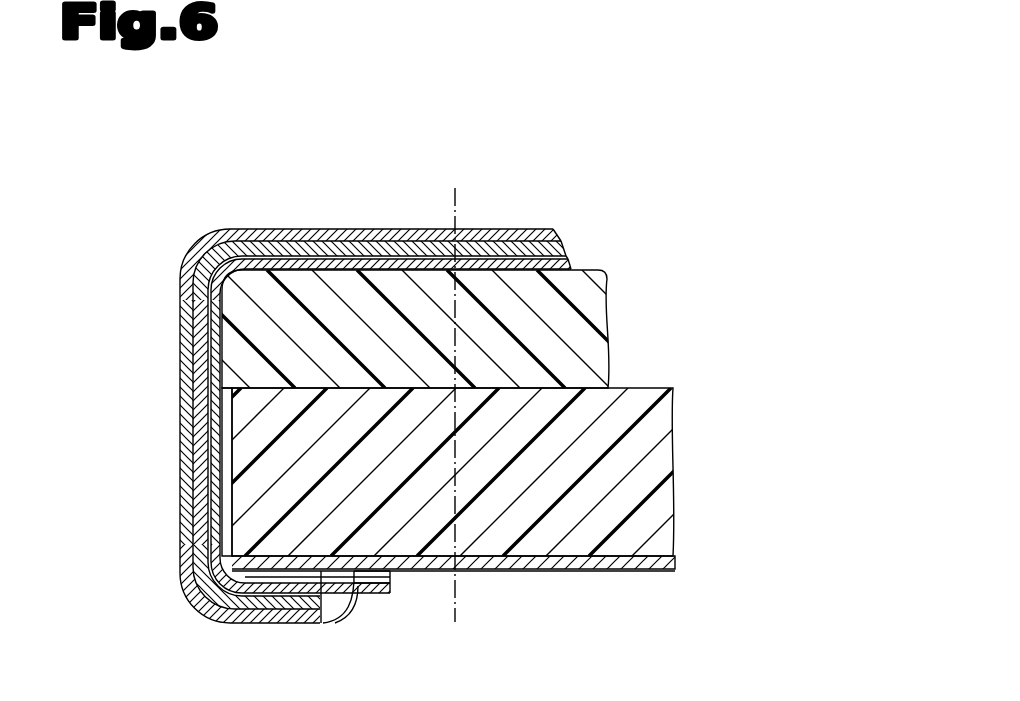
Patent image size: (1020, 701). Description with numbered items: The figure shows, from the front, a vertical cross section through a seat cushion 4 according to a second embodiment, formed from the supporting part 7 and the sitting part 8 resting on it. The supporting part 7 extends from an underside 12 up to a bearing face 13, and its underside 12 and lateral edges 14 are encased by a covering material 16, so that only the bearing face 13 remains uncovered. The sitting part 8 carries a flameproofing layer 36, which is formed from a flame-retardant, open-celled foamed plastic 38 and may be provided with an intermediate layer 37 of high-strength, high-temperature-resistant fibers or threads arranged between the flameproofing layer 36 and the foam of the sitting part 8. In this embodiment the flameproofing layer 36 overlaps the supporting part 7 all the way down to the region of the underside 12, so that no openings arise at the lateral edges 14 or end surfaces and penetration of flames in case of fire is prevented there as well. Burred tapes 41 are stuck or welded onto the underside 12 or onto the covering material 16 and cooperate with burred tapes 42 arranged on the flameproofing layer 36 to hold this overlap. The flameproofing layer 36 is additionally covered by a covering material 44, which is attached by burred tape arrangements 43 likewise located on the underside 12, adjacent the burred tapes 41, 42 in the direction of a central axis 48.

The seat cushion 4 is at (623, 147).
The supporting part 7 is at (685, 490).
The sitting part 8 is at (592, 335).
The underside 12 is at (645, 570).
The bearing face 13 is at (641, 384).
The lateral edges 14 is at (235, 478).
The covering material 16 is at (575, 571).
The flameproofing layer 36 is at (290, 240).
The intermediate layer 37 is at (398, 247).
The foamed plastic 38 is at (257, 240).
The burred tapes 41 is at (340, 598).
The burred tapes 42 is at (323, 600).
The burred tape arrangements 43 is at (396, 600).
The covering material 44 is at (345, 232).
The central axis 48 is at (456, 197).